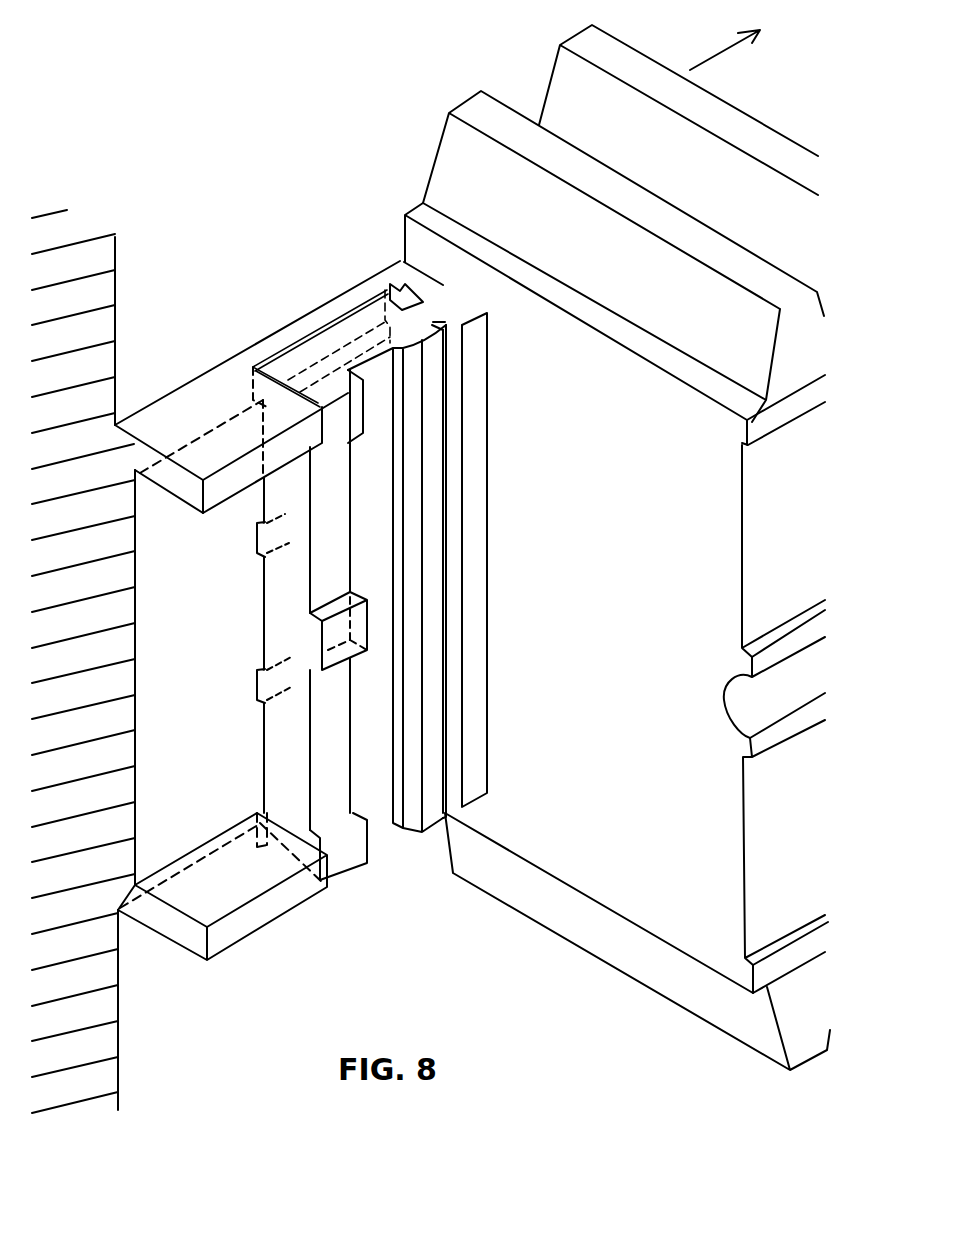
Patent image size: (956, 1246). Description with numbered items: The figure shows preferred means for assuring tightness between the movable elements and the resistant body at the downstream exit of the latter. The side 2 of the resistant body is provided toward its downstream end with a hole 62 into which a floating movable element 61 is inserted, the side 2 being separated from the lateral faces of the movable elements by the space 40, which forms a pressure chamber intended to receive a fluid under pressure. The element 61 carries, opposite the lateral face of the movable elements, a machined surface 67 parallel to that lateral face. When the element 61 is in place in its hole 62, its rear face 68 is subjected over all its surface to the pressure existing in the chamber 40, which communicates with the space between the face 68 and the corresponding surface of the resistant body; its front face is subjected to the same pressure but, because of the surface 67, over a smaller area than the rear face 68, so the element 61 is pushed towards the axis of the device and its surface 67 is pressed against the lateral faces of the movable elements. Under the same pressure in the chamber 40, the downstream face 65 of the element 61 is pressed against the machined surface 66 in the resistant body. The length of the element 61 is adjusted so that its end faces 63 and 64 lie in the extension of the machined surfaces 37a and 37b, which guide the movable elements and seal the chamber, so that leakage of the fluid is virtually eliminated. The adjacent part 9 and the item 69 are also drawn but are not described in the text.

The side of the body 2 is at (78, 252).
The door 9 is at (662, 740).
The machined surface 37a is at (243, 422).
The machined surface 37b is at (188, 942).
The space forming pressure chamber 40 is at (215, 718).
The floating movable element 61 is at (373, 700).
The hole 62 is at (448, 360).
The end face 63 is at (360, 348).
The end face 64 is at (378, 807).
The downstream face 65 is at (390, 283).
The machined surface 66 is at (423, 302).
The machined surface 67 is at (435, 673).
The rear face 68 is at (308, 338).
The retaining plate 69 is at (272, 373).